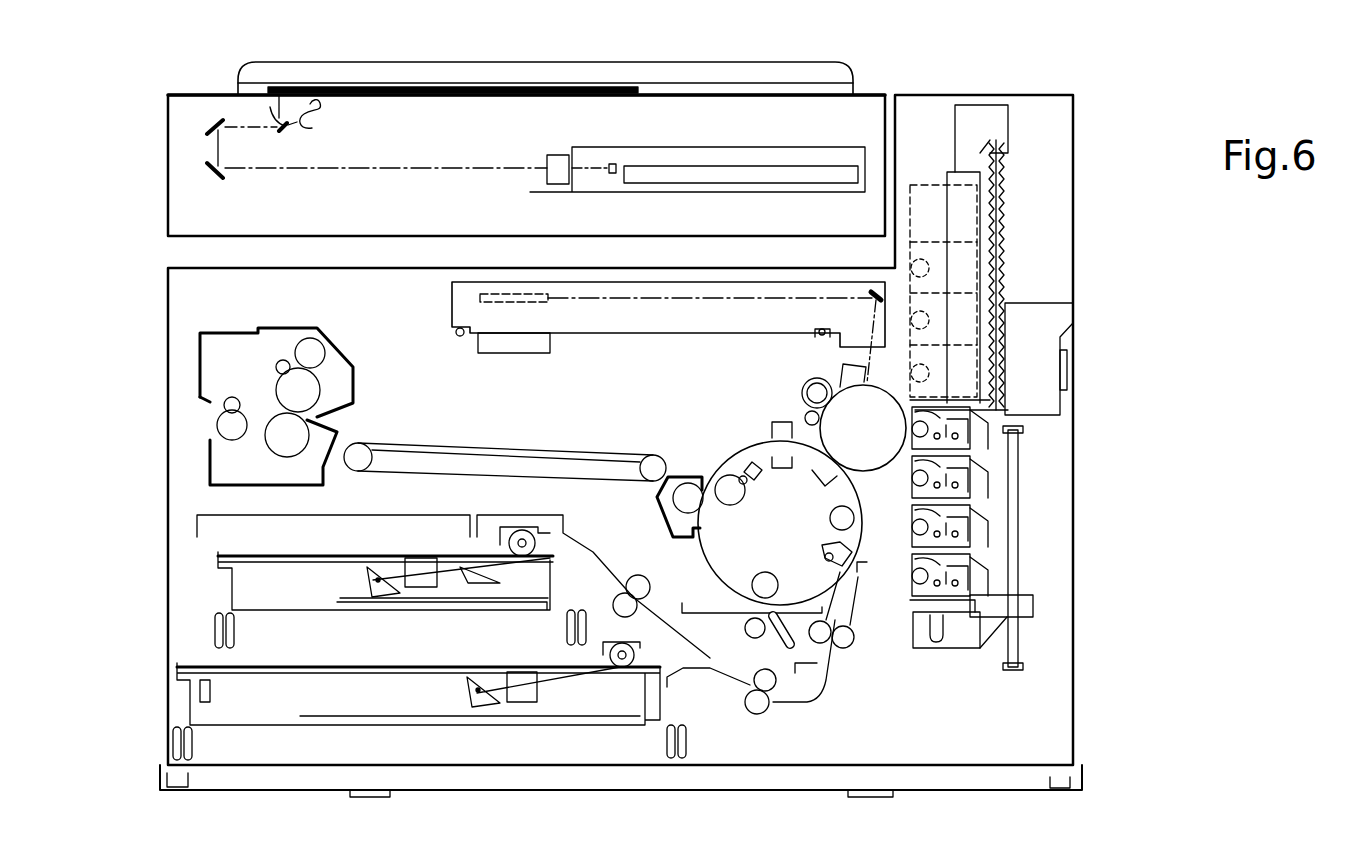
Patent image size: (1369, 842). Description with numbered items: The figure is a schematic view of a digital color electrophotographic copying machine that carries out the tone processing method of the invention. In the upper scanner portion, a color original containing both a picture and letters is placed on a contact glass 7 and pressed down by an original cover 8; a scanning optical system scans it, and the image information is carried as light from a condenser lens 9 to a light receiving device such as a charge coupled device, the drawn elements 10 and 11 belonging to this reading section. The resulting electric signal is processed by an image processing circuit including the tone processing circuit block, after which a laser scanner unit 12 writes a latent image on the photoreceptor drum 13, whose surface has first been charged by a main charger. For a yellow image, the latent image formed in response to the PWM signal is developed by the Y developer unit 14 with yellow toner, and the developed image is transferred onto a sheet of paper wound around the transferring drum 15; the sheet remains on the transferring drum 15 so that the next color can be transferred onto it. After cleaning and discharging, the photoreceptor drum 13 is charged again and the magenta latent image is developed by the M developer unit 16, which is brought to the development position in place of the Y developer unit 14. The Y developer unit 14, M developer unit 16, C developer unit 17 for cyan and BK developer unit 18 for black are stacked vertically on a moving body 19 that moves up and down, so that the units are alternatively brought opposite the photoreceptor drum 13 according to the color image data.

The contact glass 7 is at (428, 88).
The original cover 8 is at (505, 62).
The condenser lens 9 is at (553, 157).
The image sensor 10 is at (613, 162).
The image reading unit 11 is at (807, 170).
The laser scanner unit 12 is at (588, 333).
The photoreceptor drum 13 is at (869, 447).
The Y developer unit 14 is at (874, 344).
The transferring drum 15 is at (712, 561).
The M developer unit 16 is at (912, 492).
The C developer unit 17 is at (912, 540).
The BK developer unit 18 is at (910, 588).
The moving body 19 is at (938, 648).